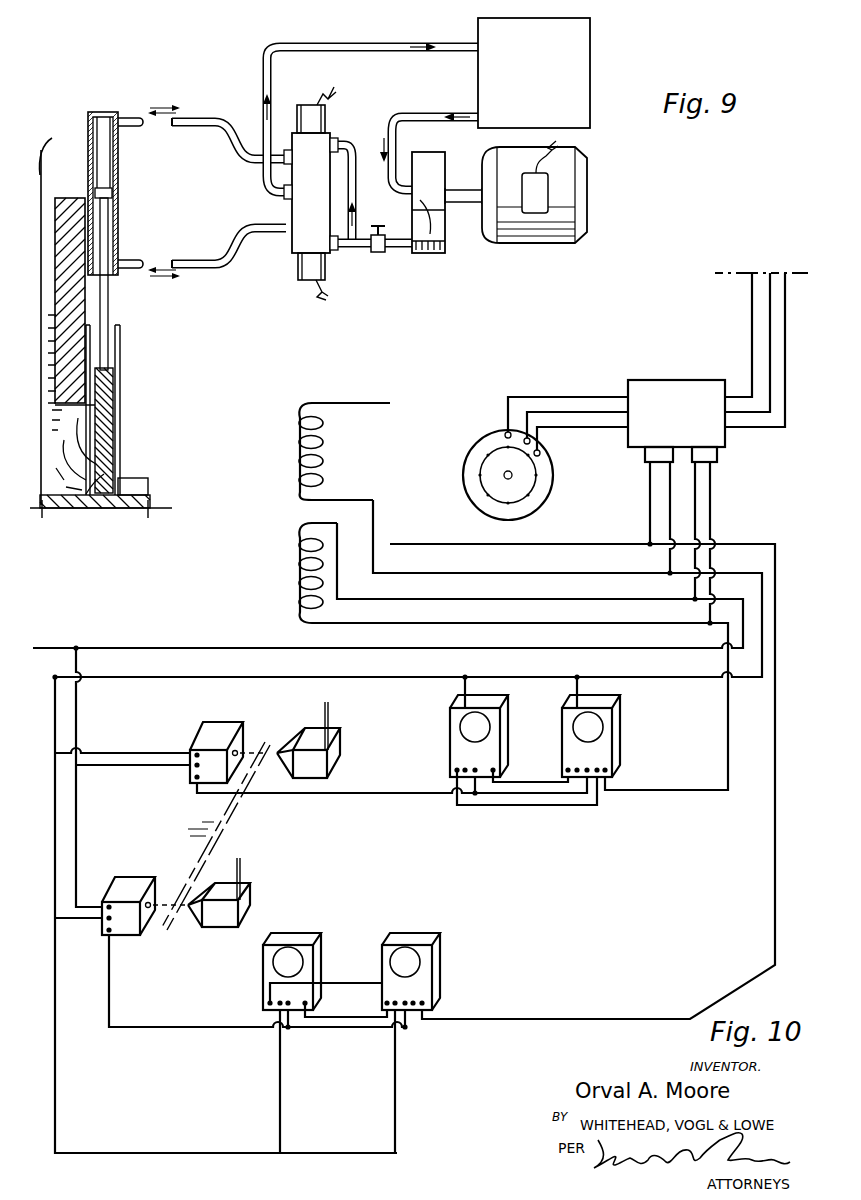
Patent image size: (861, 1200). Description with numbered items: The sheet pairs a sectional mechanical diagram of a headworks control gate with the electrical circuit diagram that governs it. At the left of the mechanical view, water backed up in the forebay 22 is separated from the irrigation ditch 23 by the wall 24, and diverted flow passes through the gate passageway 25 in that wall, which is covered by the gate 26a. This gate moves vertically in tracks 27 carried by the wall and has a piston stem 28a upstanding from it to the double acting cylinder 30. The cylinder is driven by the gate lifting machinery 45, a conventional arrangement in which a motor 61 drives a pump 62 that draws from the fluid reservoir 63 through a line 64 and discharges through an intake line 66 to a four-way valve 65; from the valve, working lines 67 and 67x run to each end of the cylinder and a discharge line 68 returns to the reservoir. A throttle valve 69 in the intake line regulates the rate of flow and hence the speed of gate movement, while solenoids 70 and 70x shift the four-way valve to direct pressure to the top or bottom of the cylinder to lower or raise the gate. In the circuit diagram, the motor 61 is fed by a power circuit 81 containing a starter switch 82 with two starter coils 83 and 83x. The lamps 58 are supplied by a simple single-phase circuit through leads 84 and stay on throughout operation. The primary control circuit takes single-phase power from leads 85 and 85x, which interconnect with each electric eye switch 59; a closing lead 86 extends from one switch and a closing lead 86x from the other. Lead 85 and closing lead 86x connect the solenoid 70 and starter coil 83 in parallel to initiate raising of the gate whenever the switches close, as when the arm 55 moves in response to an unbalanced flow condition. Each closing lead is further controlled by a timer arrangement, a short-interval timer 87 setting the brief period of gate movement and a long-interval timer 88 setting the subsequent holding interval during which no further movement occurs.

In FIG. 9, the forebay 22 is at (52, 319).
In FIG. 9, the irrigation ditch 23 is at (138, 484).
In FIG. 9, the wall 24 is at (84, 198).
In FIG. 9, the gate passageway 25 is at (76, 445).
In FIG. 9, the gate 26a is at (115, 406).
In FIG. 9, the tracks 27 is at (120, 350).
In FIG. 9, the piston stem 28a is at (110, 298).
In FIG. 9, the double acting cylinder 30 is at (118, 211).
In FIG. 9, the gate lifting machinery 45 is at (400, 292).
In FIG. 10, the arm 55 is at (218, 842).
In FIG. 10, the lamps 58 is at (246, 906).
In FIG. 10, the electric eye switches 59 is at (184, 828).
In FIG. 9, the motor 61 is at (534, 208).
In FIG. 10, the motor 61 is at (545, 446).
In FIG. 9, the pump 62 is at (440, 254).
In FIG. 9, the fluid reservoir 63 is at (534, 73).
In FIG. 9, the line 64 is at (425, 115).
In FIG. 9, the four-way valve 65 is at (311, 193).
In FIG. 9, the intake line 66 is at (404, 250).
In FIG. 9, the working line 67 is at (200, 264).
In FIG. 9, the working line 67x is at (174, 122).
In FIG. 9, the discharge line 68 is at (359, 50).
In FIG. 9, the throttle valve 69 is at (375, 252).
In FIG. 9, the solenoid 70 is at (298, 273).
In FIG. 10, the solenoid 70 is at (300, 568).
In FIG. 9, the solenoid 70x is at (326, 119).
In FIG. 10, the solenoid 70x is at (318, 454).
In FIG. 9, the power circuit 81 is at (526, 176).
In FIG. 10, the power circuit 81 is at (592, 397).
In FIG. 10, the starter switch 82 is at (718, 360).
In FIG. 10, the starter coil 83 is at (708, 456).
In FIG. 10, the starter coil 83x is at (652, 456).
In FIG. 10, the leads 84 is at (329, 716).
In FIG. 10, the lead 85 is at (431, 602).
In FIG. 10, the lead 85x is at (459, 575).
In FIG. 10, the closing lead 86 is at (455, 544).
In FIG. 10, the closing lead 86x is at (515, 627).
In FIG. 10, the short-interval timer 87 is at (616, 716).
In FIG. 10, the long-interval timer 88 is at (504, 716).